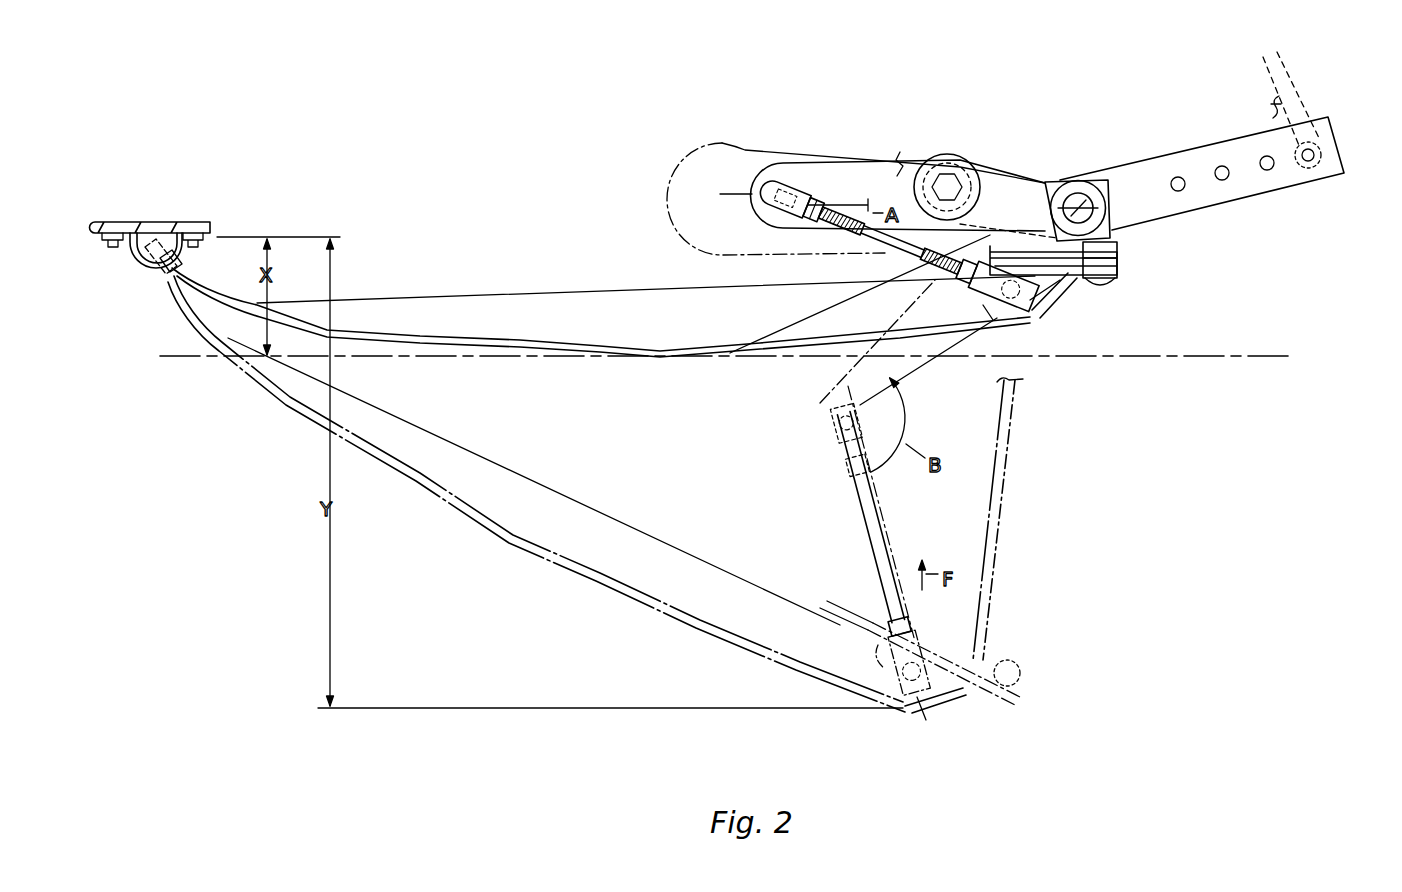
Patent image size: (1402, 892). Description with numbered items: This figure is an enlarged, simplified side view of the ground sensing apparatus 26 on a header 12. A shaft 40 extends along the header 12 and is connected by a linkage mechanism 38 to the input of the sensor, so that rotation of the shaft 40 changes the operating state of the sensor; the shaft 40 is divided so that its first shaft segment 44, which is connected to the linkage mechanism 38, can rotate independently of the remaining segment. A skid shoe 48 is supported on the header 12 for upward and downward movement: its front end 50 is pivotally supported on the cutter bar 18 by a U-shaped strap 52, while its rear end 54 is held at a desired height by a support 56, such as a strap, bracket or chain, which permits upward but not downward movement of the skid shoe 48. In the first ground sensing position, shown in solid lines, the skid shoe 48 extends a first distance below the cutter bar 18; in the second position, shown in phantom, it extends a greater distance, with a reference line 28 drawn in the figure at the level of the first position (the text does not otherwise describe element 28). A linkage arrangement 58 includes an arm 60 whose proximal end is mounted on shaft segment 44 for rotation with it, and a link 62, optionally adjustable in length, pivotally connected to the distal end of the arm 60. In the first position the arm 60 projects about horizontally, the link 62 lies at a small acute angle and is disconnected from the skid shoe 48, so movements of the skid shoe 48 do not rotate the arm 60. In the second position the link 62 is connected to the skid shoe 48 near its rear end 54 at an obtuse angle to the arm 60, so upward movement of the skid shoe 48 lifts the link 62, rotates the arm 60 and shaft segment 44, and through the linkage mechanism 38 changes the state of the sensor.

The header 12 is at (1240, 440).
The cutter bar 18 is at (210, 232).
The ground sensing apparatus 26 is at (1128, 260).
The reference ground line 28 is at (1290, 357).
The linkage mechanism 38 is at (1344, 174).
The shaft 40 is at (1110, 171).
The first shaft segment 44 is at (1080, 197).
The skid shoe 48 is at (730, 349).
The front end 50 is at (162, 274).
The U-shaped strap 52 is at (133, 268).
The rear end 54 is at (1115, 285).
The support 56 is at (1001, 496).
The linkage arrangement 58 is at (913, 158).
The arm 60 is at (845, 162).
The link 62 is at (873, 250).